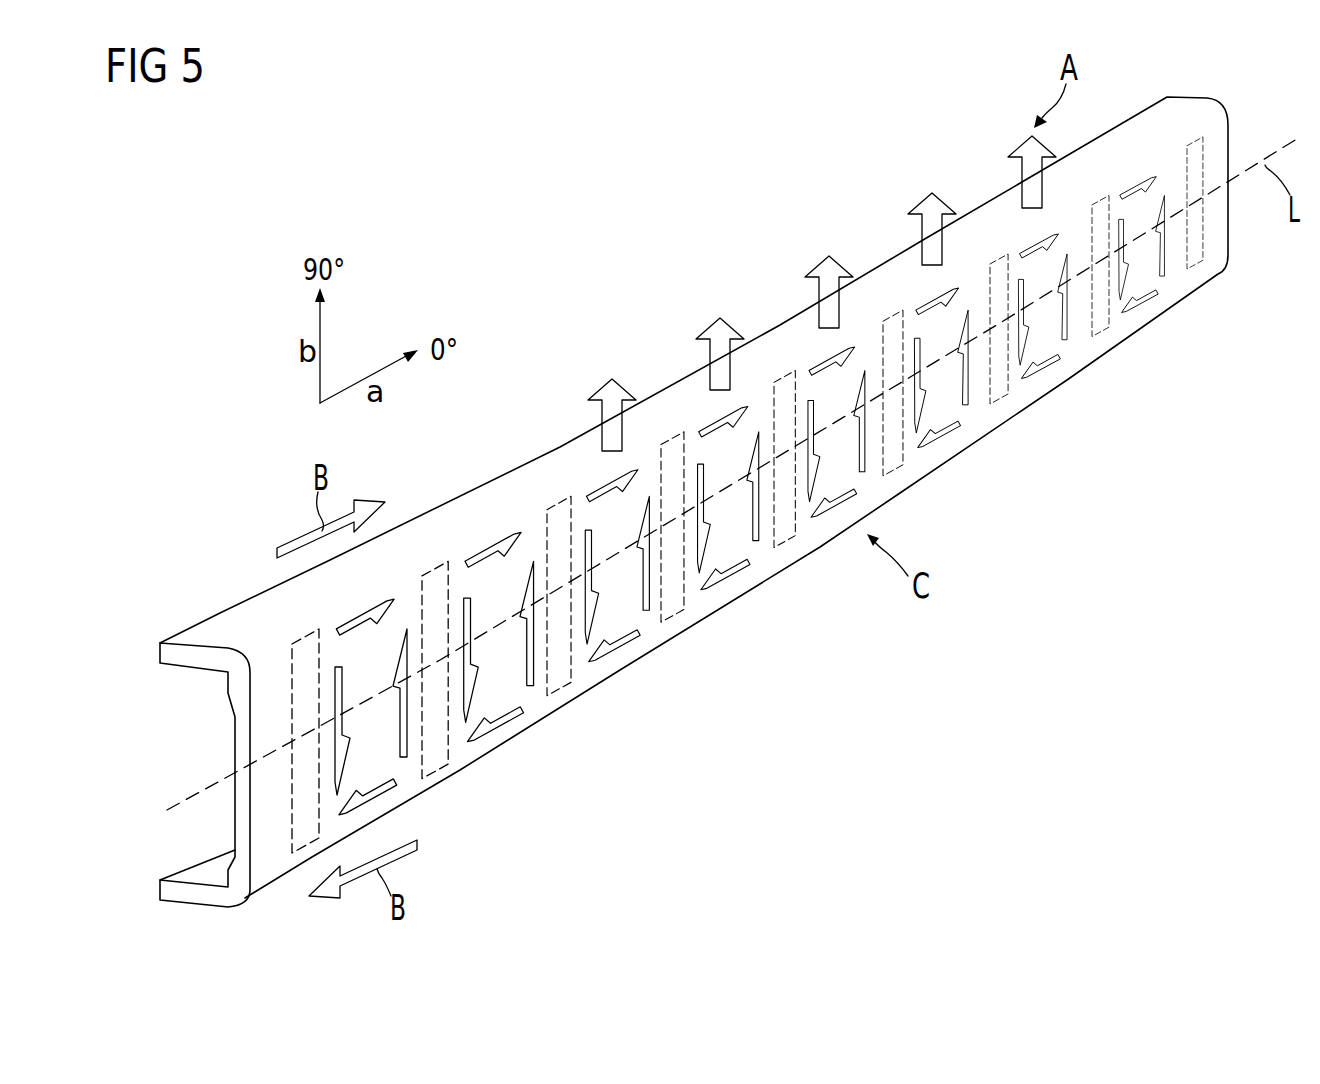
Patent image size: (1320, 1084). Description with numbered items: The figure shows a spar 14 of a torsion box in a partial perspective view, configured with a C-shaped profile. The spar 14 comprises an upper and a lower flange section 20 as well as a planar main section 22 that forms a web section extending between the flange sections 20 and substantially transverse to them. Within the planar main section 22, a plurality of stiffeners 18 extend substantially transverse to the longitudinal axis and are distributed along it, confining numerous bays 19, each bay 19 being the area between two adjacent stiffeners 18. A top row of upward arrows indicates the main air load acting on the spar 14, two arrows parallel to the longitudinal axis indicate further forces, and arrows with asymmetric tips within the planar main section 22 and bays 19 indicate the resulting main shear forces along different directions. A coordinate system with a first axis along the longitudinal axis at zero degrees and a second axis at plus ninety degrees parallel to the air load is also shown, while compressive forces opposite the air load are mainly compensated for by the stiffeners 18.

The spar 14 is at (732, 242).
The stiffener 18 is at (666, 598).
The bay 19 is at (612, 610).
The flange section 20 is at (196, 658).
The planar main section 22 is at (240, 803).